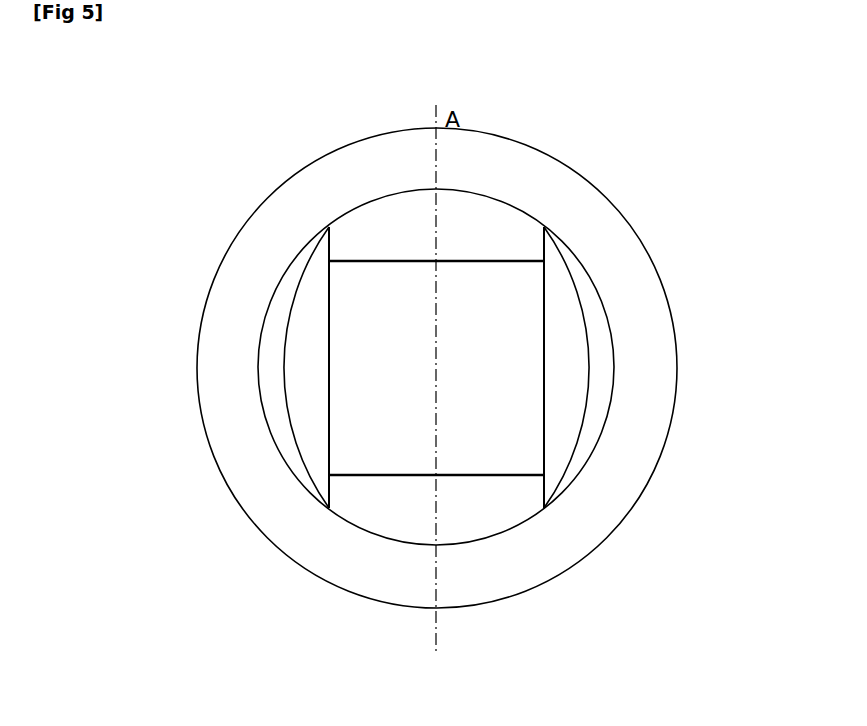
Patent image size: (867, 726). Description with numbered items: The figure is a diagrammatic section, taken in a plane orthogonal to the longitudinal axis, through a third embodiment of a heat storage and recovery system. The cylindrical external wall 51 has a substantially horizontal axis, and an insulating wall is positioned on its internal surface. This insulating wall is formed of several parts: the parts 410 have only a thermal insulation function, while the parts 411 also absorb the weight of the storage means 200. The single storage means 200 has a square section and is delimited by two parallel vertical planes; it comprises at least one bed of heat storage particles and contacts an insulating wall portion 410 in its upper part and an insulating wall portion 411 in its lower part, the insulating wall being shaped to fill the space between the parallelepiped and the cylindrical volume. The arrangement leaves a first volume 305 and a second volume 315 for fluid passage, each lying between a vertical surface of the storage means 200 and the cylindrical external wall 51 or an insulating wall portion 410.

The cylindrical external wall 51 is at (603, 255).
The storage means 200 is at (380, 303).
The first volume 305 is at (558, 347).
The second volume 315 is at (308, 382).
The insulating wall part 410 is at (445, 250).
The insulating wall part 411 is at (487, 512).